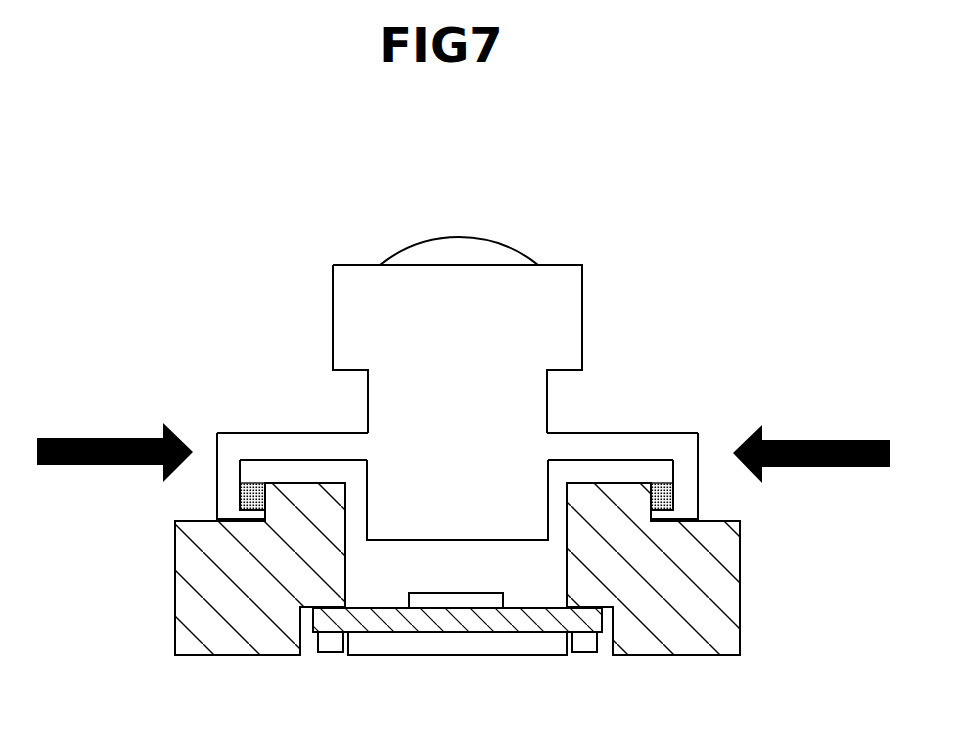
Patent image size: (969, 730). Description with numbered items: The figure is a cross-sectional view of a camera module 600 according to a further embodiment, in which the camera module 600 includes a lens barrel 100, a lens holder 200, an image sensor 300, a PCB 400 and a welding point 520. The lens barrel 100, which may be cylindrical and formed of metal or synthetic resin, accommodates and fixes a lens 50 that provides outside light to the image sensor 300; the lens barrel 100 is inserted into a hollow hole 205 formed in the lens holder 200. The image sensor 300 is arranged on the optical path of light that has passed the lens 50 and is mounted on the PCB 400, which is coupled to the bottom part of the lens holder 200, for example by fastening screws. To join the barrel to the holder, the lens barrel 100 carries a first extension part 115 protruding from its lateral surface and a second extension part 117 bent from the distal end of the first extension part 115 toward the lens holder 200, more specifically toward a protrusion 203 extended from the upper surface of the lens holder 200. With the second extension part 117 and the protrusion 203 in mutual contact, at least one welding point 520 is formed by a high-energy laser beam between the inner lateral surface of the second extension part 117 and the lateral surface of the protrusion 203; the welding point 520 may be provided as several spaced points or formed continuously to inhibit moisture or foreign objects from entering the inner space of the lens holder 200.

The camera module 600 is at (695, 228).
The lens barrel 100 is at (413, 300).
The lens 50 is at (495, 244).
The first extension part 115 is at (585, 442).
The second extension part 117 is at (688, 478).
The welding point 520 is at (663, 500).
The lens holder 200 is at (160, 555).
The protrusion 203 is at (303, 493).
The hollow hole 205 is at (384, 566).
The image sensor 300 is at (437, 597).
The PCB 400 is at (523, 630).